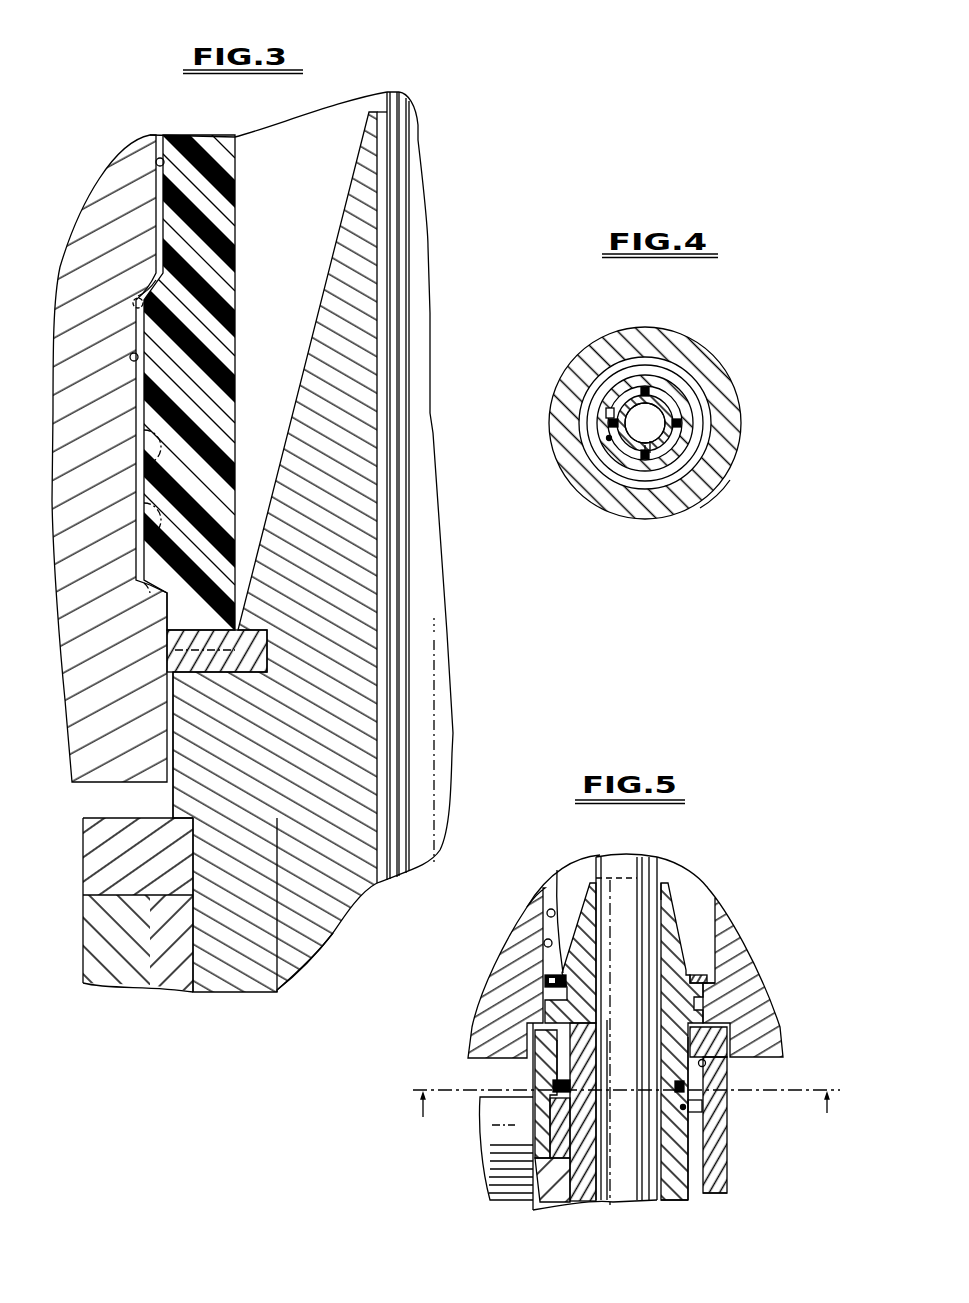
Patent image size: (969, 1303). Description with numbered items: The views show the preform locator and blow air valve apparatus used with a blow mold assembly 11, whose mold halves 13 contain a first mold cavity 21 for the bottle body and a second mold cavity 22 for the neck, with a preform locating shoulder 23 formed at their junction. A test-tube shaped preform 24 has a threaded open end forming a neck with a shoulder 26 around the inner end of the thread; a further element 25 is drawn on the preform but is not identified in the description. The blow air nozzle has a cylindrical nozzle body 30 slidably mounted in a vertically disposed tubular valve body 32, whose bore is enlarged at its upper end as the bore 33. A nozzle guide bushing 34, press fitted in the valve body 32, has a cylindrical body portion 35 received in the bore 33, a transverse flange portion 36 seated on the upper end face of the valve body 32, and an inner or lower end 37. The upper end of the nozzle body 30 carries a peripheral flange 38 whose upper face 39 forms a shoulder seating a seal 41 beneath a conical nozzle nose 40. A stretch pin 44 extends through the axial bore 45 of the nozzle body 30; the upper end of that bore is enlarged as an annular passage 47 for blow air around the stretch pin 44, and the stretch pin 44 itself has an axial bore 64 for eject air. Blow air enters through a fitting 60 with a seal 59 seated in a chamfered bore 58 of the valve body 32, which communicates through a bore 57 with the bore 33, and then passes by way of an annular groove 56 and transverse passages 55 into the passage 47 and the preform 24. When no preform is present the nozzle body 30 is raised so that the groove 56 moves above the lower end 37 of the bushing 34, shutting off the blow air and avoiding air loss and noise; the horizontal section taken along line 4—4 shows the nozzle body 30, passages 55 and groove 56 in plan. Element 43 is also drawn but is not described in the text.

In FIG. 5, the section line 4 is at (625, 1114).
In FIG. 3, the blow mold assembly 11 is at (50, 480).
In FIG. 5, the blow mold assembly 11 is at (470, 991).
In FIG. 3, the mold half 13 is at (62, 393).
In FIG. 5, the mold half 13 is at (497, 987).
In FIG. 3, the first mold cavity 21 is at (157, 164).
In FIG. 3, the second mold cavity 22 is at (130, 358).
In FIG. 5, the second mold cavity 22 is at (544, 943).
In FIG. 3, the preform locating shoulder 23 is at (145, 298).
In FIG. 5, the preform locating shoulder 23 is at (547, 912).
In FIG. 3, the preform 24 is at (250, 289).
In FIG. 3, the annular space 25 is at (207, 480).
In FIG. 3, the shoulder 26 is at (117, 307).
In FIG. 3, the nozzle body 30 is at (305, 962).
In FIG. 4, the nozzle body 30 is at (637, 383).
In FIG. 5, the nozzle body 30 is at (672, 1183).
In FIG. 3, the valve body 32 is at (116, 993).
In FIG. 4, the valve body 32 is at (717, 492).
In FIG. 5, the valve body 32 is at (707, 1196).
In FIG. 4, the enlarged bore 33 is at (710, 478).
In FIG. 5, the enlarged bore 33 is at (700, 1163).
In FIG. 3, the nozzle guide bushing 34 is at (107, 865).
In FIG. 4, the nozzle guide bushing 34 is at (713, 447).
In FIG. 5, the nozzle guide bushing 34 is at (533, 1033).
In FIG. 3, the cylindrical body portion 35 is at (235, 980).
In FIG. 4, the cylindrical body portion 35 is at (672, 397).
In FIG. 5, the cylindrical body portion 35 is at (699, 1080).
In FIG. 3, the transverse flange portion 36 is at (97, 837).
In FIG. 5, the transverse flange portion 36 is at (728, 1033).
In FIG. 5, the inner end of bushing body portion 37 is at (696, 1104).
In FIG. 3, the peripheral flange 38 is at (193, 788).
In FIG. 5, the peripheral flange 38 is at (700, 995).
In FIG. 3, the upper face 39 is at (160, 612).
In FIG. 5, the upper face 39 is at (543, 910).
In FIG. 3, the conical nozzle nose 40 is at (355, 203).
In FIG. 5, the conical nozzle nose 40 is at (675, 943).
In FIG. 3, the seal 41 is at (180, 661).
In FIG. 5, the seal 41 is at (712, 973).
In FIG. 5, the screw 43 is at (706, 1063).
In FIG. 3, the stretch pin 44 is at (412, 411).
In FIG. 4, the stretch pin 44 is at (609, 437).
In FIG. 5, the stretch pin 44 is at (661, 857).
In FIG. 5, the bore 45 is at (618, 1200).
In FIG. 4, the annular passage 47 is at (606, 416).
In FIG. 5, the annular passage 47 is at (664, 893).
In FIG. 4, the transverse passages 55 is at (676, 392).
In FIG. 5, the transverse passages 55 is at (553, 1086).
In FIG. 4, the annular groove 56 is at (607, 454).
In FIG. 5, the annular groove 56 is at (686, 1107).
In FIG. 5, the bore 57 is at (560, 1160).
In FIG. 5, the chamfered bore 58 is at (540, 1113).
In FIG. 5, the seal 59 is at (538, 1200).
In FIG. 5, the fitting 60 is at (485, 1205).
In FIG. 4, the axial bore 64 is at (663, 472).